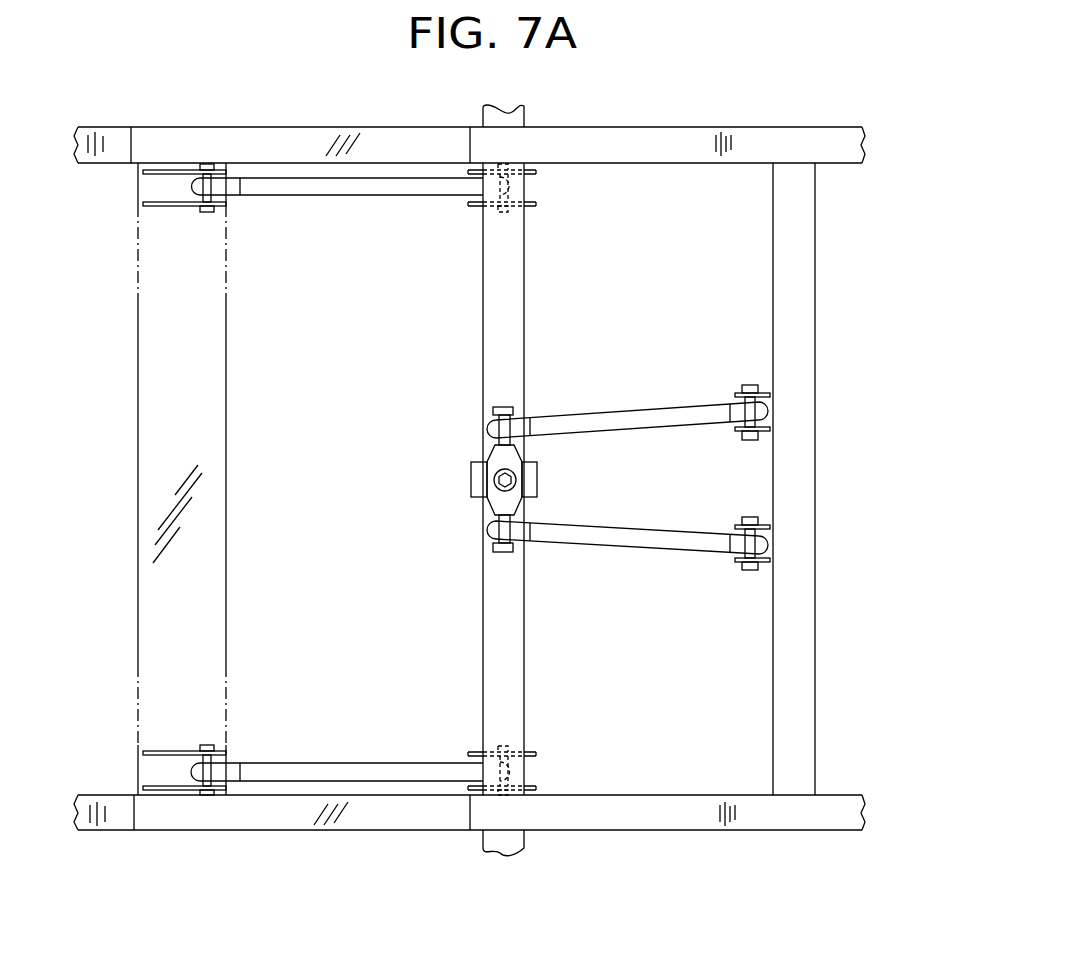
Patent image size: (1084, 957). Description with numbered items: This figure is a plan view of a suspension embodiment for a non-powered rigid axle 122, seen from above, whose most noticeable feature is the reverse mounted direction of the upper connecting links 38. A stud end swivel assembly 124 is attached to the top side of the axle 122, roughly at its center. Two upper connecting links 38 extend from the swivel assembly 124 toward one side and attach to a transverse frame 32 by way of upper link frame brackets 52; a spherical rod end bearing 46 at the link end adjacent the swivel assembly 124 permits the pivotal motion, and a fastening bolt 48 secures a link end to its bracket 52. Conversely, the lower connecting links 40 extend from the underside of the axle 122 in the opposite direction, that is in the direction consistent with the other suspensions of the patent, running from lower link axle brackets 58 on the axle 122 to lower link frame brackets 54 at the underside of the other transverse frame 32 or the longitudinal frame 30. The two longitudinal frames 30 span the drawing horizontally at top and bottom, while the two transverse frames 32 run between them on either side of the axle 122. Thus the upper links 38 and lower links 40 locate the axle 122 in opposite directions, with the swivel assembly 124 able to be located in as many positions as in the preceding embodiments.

The longitudinal frame 30 is at (663, 150).
The transverse frame 32 is at (203, 356).
The upper connecting link 38 is at (653, 413).
The lower connecting link 40 is at (350, 190).
The spherical rod end bearing 46 is at (487, 425).
The fastening bolt 48 is at (750, 570).
The upper link frame bracket 52 is at (735, 392).
The lower link frame bracket 54 is at (227, 203).
The lower link axle bracket 58 is at (470, 203).
The non-powered rigid axle 122 is at (492, 588).
The stud end swivel assembly 124 is at (442, 478).